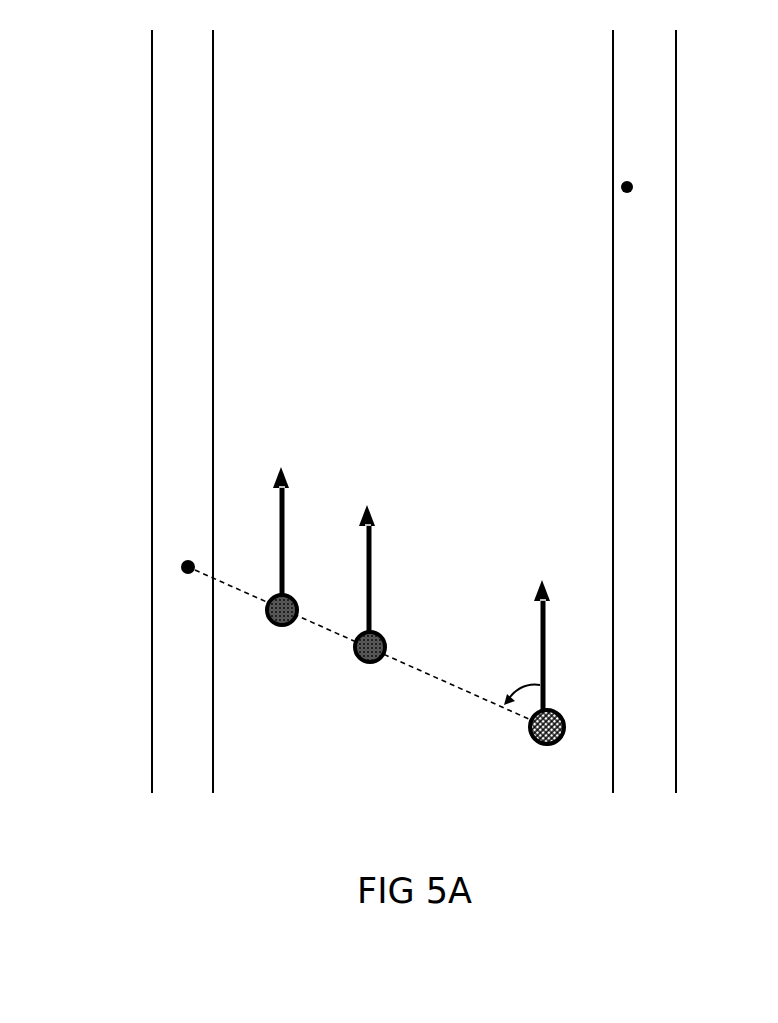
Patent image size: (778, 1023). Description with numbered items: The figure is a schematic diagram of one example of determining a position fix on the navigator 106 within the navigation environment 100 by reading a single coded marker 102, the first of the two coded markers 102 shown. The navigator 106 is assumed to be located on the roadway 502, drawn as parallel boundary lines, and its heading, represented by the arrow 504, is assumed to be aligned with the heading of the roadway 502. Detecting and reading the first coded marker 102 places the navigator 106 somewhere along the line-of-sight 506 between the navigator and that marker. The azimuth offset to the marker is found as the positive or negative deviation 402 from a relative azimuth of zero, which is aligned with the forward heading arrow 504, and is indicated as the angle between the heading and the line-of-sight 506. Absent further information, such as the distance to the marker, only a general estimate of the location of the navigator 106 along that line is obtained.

The navigation environment 100 is at (128, 162).
The coded markers 102 is at (613, 185).
The roadway 502 is at (447, 330).
The arrow 504 is at (371, 576).
The line-of-sight 506 is at (450, 688).
The deviation 402 is at (490, 678).
The navigator 106 is at (534, 746).